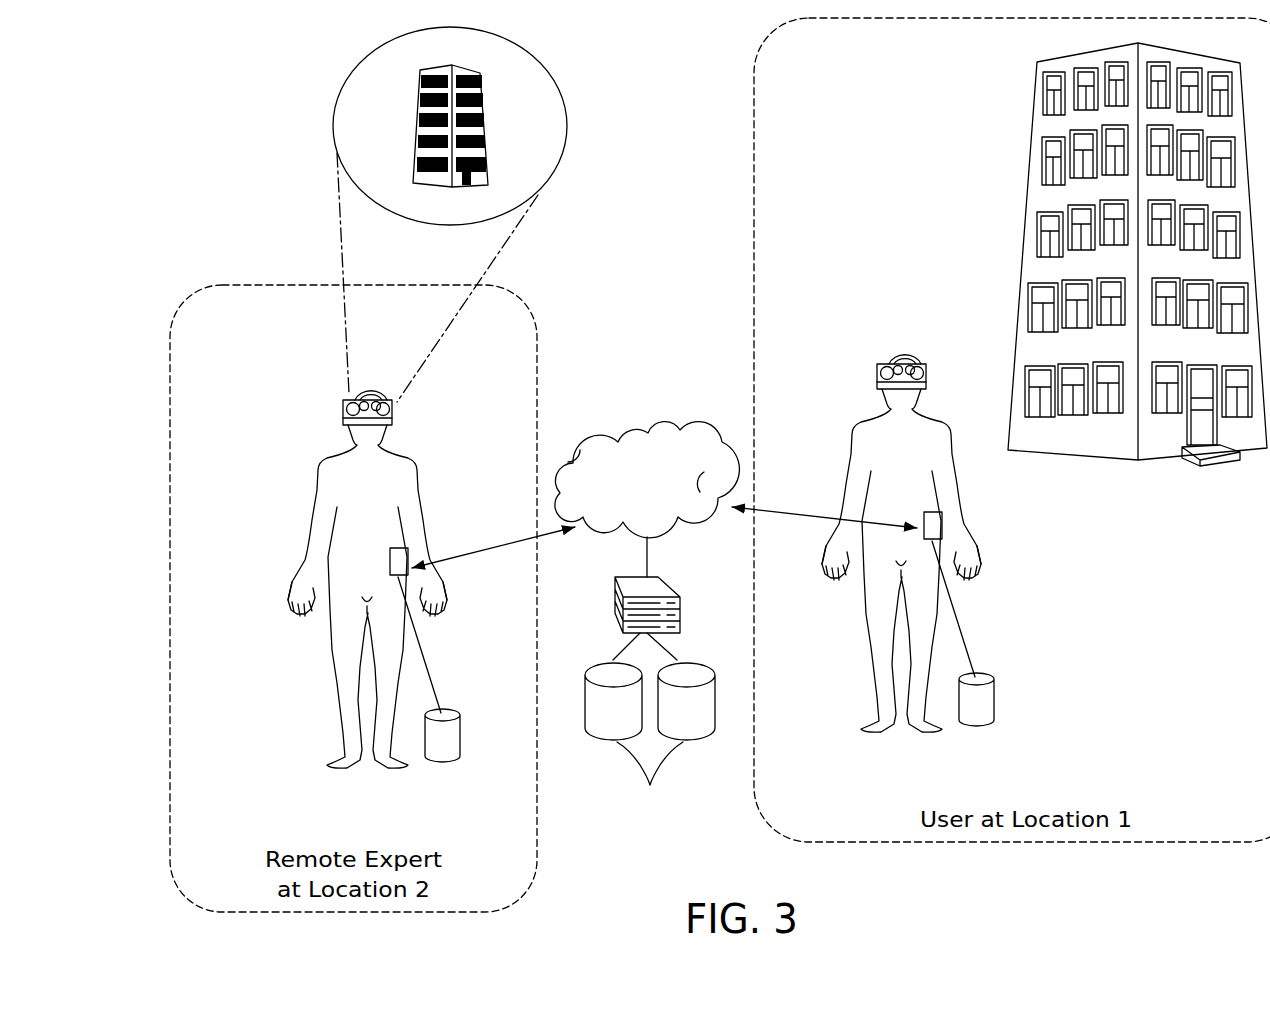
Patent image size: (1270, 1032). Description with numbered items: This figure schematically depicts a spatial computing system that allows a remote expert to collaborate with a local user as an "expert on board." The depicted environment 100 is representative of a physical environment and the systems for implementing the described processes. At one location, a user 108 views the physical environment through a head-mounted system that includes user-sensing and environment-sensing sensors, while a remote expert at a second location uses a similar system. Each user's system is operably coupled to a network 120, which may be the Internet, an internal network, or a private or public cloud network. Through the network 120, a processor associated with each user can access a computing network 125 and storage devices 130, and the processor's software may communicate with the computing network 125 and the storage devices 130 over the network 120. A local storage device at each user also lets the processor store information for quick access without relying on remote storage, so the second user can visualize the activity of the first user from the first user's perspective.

The environment 100 is at (258, 102).
The user 108 is at (317, 492).
The network 120 is at (663, 496).
The computing network 125 is at (615, 592).
The storage devices 130 is at (650, 739).